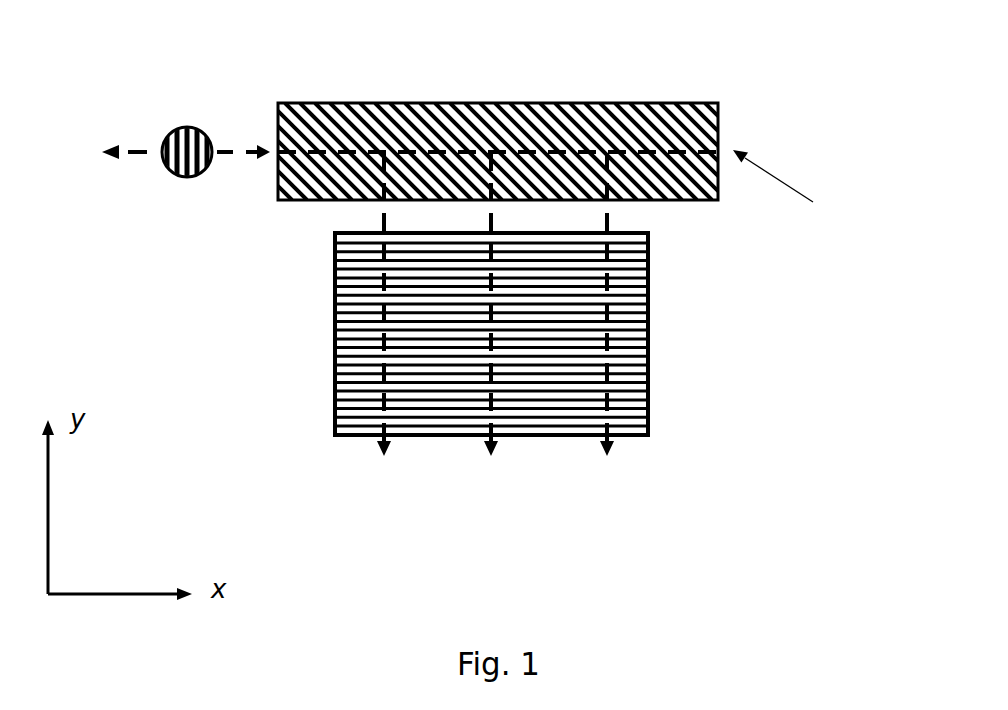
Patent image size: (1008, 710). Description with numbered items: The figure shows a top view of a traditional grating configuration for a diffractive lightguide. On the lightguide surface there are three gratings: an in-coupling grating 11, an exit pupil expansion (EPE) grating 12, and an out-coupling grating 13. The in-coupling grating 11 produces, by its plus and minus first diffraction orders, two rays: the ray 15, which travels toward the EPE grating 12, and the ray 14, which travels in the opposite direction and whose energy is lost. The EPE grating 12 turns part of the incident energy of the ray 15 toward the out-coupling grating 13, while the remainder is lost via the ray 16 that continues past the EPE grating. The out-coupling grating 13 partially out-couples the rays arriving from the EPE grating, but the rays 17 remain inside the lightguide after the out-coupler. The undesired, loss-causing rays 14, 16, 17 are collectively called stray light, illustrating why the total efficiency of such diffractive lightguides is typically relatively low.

The in-coupling grating 11 is at (177, 128).
The exit pupil expansion (EPE) grating 12 is at (718, 103).
The out-coupling grating 13 is at (648, 306).
The ray 14 is at (127, 160).
The ray 15 is at (247, 152).
The ray 16 is at (798, 181).
The rays 17 is at (383, 463).